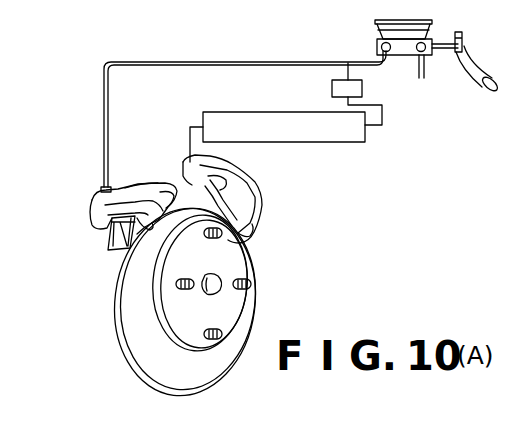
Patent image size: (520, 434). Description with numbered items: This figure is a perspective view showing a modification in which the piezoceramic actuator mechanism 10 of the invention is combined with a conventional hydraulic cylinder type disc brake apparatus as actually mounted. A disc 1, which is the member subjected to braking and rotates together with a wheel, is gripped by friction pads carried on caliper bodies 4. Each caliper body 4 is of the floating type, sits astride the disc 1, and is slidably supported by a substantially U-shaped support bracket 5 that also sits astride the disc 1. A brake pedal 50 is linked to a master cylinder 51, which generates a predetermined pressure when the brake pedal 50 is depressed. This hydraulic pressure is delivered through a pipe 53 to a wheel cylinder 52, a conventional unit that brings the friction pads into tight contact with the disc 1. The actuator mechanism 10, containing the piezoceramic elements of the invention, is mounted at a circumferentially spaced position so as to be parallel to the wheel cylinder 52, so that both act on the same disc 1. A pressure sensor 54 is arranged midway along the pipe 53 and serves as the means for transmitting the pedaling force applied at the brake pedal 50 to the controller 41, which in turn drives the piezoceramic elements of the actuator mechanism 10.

The disc 1 is at (248, 308).
The caliper body 4 is at (97, 198).
The support bracket 5 is at (140, 253).
The actuator mechanism 10 is at (262, 168).
The controller 41 is at (281, 111).
The brake pedal 50 is at (468, 61).
The master cylinder 51 is at (404, 55).
The wheel cylinder 52 is at (138, 175).
The pipe 53 is at (230, 61).
The pressure sensor 54 is at (362, 86).